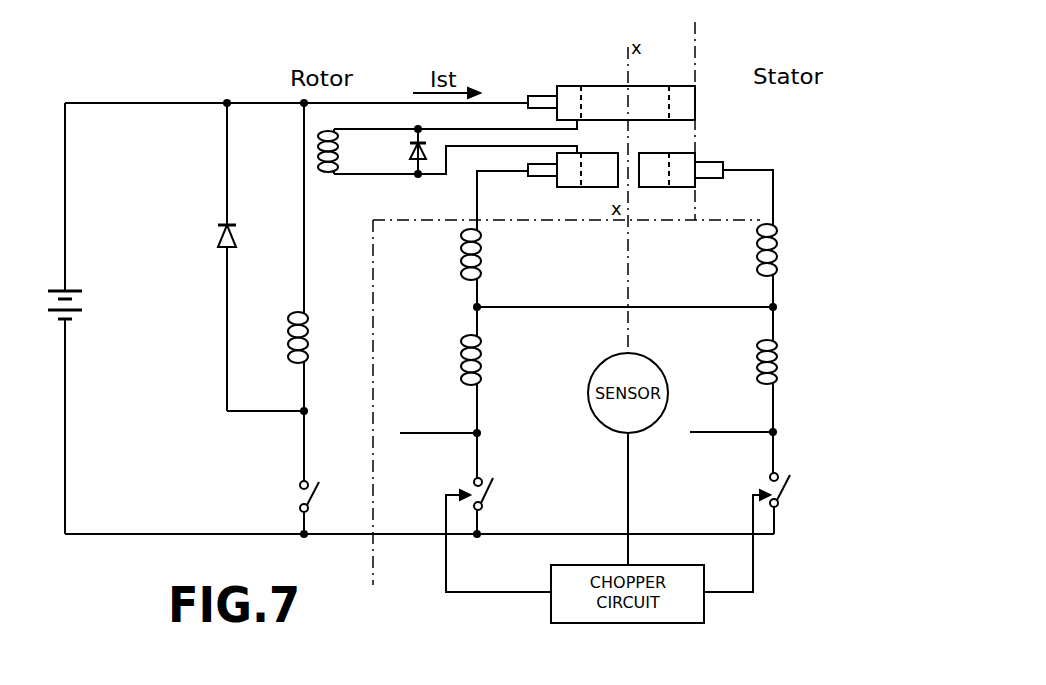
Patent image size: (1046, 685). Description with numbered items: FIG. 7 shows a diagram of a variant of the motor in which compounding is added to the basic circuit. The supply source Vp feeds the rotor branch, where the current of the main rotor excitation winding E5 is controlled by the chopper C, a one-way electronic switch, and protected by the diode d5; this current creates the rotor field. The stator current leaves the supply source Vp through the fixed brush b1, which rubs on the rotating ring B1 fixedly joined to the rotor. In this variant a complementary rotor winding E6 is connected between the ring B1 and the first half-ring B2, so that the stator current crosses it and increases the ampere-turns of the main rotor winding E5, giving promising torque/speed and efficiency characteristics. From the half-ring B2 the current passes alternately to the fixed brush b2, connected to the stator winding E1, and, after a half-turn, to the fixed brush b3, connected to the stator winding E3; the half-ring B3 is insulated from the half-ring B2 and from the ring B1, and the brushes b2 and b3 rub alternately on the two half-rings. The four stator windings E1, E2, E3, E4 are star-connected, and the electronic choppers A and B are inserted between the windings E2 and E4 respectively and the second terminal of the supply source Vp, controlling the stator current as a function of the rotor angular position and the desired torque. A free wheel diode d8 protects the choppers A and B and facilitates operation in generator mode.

The supply source Vp is at (85, 301).
The diode d5 is at (209, 238).
The main rotor excitation winding E5 is at (318, 337).
The chopper C is at (318, 496).
The complementary rotor winding E6 is at (345, 151).
The free wheel diode d8 is at (410, 152).
The fixed brush b1 is at (545, 97).
The rotating ring B1 is at (603, 93).
The fixed brush b2 is at (540, 177).
The first half-ring B2 is at (597, 177).
The half-ring B3 is at (652, 172).
The fixed brush b3 is at (716, 175).
The stator winding E1 is at (490, 254).
The stator winding E2 is at (492, 360).
The stator winding E3 is at (786, 250).
The stator winding E4 is at (786, 362).
The electronic chopper A is at (494, 494).
The electronic chopper B is at (790, 491).